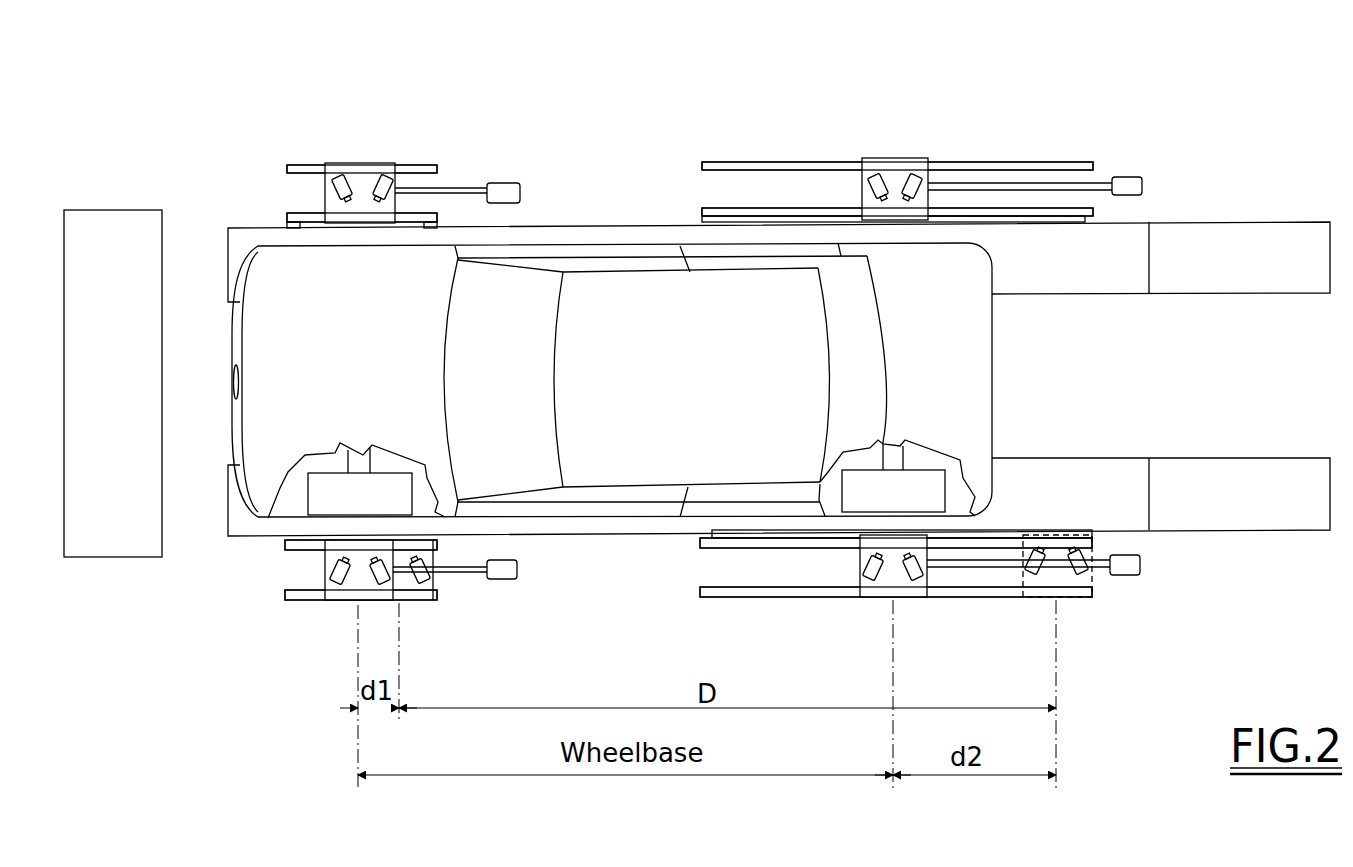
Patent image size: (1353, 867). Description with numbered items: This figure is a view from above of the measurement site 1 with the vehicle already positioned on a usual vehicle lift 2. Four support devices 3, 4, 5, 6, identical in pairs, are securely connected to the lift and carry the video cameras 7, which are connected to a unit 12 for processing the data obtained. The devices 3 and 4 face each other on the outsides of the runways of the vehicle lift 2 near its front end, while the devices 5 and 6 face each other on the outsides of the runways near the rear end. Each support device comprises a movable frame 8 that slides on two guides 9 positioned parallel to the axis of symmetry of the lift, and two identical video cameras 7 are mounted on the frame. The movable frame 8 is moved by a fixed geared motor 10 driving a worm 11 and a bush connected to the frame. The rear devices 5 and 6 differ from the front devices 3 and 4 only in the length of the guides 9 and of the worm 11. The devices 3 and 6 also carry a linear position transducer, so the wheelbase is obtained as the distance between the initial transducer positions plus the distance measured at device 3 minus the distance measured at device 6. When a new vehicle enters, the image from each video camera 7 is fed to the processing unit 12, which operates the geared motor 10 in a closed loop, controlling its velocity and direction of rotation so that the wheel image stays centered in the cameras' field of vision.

The measurement site 1 is at (586, 182).
The vehicle lift 2 is at (1105, 312).
The support device 3 is at (313, 614).
The support device 4 is at (334, 151).
The support device 5 is at (924, 110).
The support device 6 is at (920, 606).
The video camera 7 is at (382, 165).
The movable frame 8 is at (393, 165).
The guide 9 is at (290, 168).
The geared motor 10 is at (510, 183).
The worm 11 is at (462, 188).
The processing unit 12 is at (130, 401).